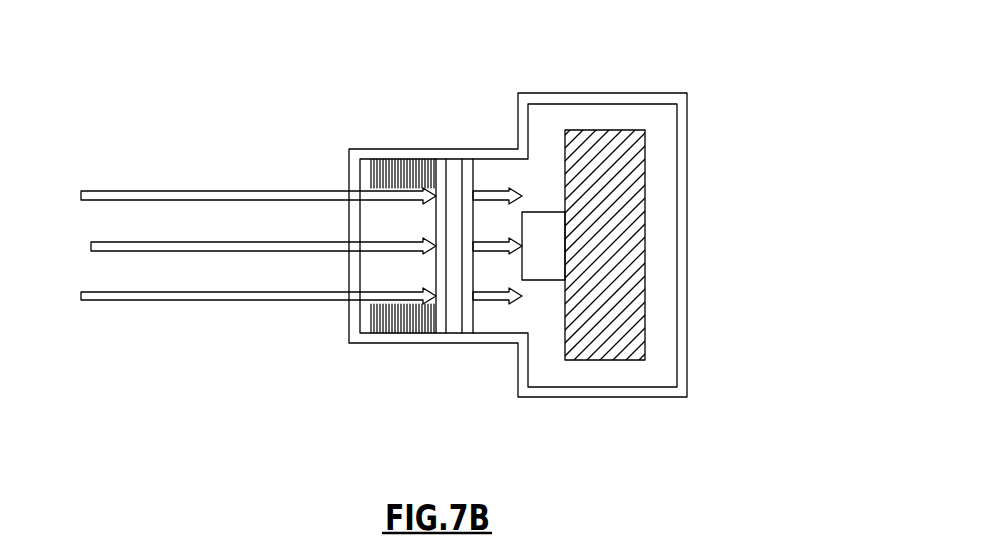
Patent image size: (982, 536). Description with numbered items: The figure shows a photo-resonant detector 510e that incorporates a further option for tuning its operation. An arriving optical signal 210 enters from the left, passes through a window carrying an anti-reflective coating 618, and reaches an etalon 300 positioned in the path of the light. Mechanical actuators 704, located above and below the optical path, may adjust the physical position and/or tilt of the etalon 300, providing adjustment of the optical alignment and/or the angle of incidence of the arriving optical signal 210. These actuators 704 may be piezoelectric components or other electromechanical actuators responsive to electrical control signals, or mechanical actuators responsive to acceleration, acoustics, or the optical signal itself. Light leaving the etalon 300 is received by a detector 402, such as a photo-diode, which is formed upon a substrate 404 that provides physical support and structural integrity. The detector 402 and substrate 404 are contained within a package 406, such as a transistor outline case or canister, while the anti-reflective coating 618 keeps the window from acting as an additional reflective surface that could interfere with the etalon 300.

The optical signal 210 is at (145, 191).
The mechanical actuators 704 is at (400, 149).
The anti-reflective coating 618 is at (359, 273).
The etalon 300 is at (457, 344).
The package 406 is at (582, 93).
The detector 402 is at (545, 270).
The substrate 404 is at (617, 338).
The photo-resonant detector 510e is at (718, 122).